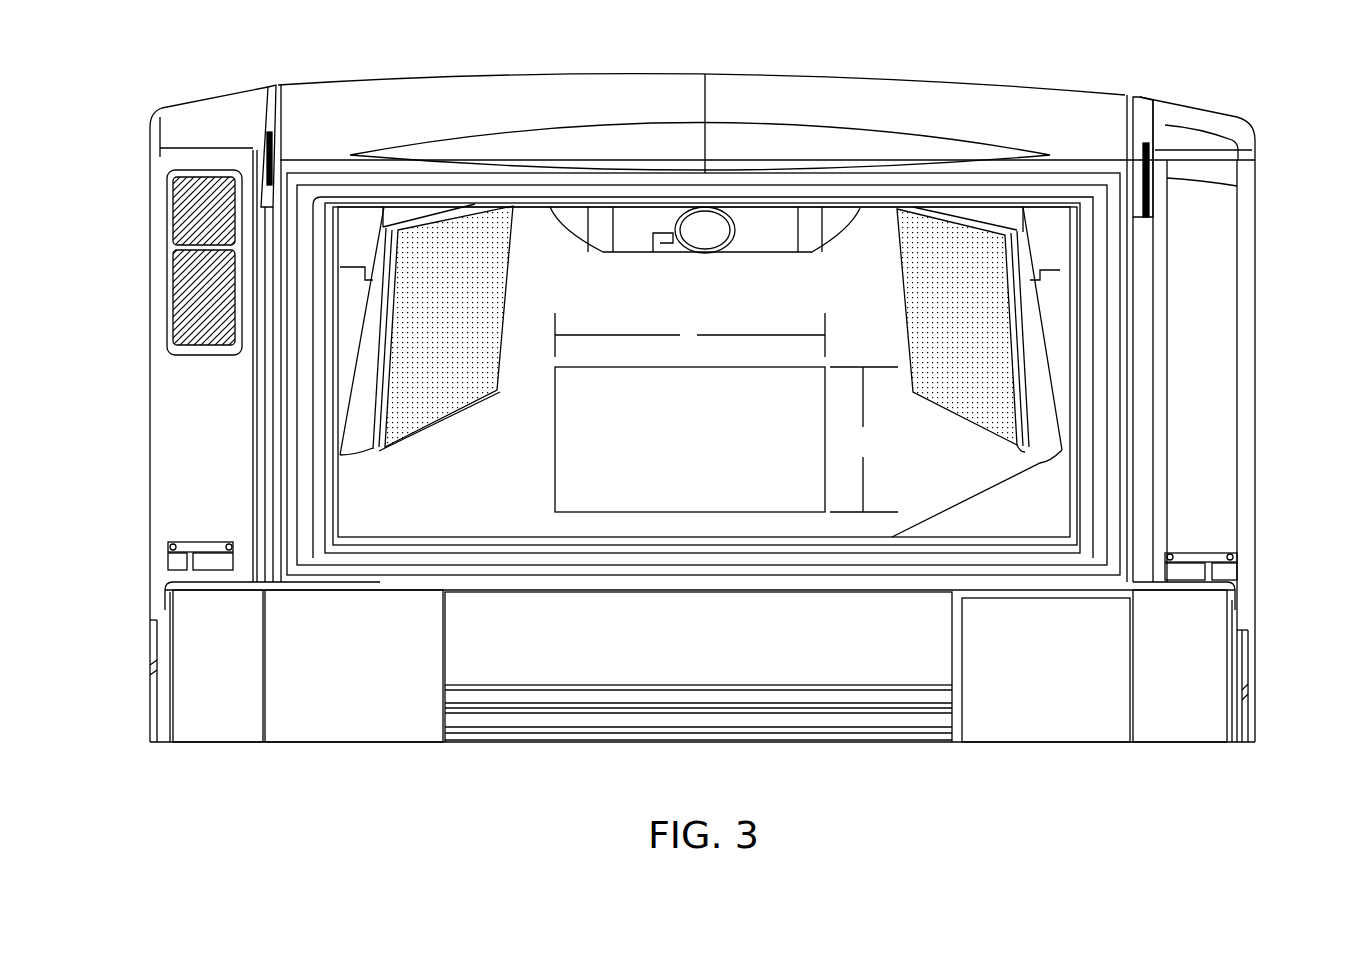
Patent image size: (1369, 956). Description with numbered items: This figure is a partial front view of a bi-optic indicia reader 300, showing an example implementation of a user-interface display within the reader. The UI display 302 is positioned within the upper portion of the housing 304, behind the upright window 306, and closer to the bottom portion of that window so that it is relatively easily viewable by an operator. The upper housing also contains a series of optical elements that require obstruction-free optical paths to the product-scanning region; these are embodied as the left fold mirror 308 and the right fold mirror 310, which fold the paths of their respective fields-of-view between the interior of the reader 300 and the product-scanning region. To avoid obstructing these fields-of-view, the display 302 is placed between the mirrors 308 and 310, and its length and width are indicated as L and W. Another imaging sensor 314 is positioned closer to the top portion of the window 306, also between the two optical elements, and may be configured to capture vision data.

The bi-optic reader 300 is at (162, 112).
The UI display 302 is at (737, 495).
The housing 304 is at (150, 293).
The upright window 306 is at (1043, 502).
The left fold mirror 308 is at (437, 322).
The right fold mirror 310 is at (970, 303).
The imaging sensor 314 is at (705, 228).